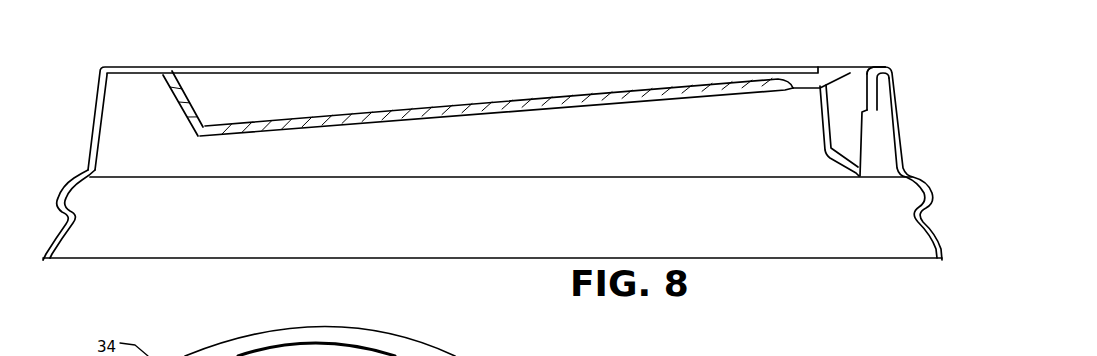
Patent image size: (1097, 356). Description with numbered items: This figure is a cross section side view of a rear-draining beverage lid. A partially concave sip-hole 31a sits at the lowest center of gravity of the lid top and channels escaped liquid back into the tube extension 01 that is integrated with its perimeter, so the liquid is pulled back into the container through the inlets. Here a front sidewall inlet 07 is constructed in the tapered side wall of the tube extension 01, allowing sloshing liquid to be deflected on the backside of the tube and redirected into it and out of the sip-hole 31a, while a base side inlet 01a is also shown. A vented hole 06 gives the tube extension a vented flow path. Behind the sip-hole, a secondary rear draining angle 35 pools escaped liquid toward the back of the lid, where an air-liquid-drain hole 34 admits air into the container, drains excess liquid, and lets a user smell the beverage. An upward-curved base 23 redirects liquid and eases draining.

The air-liquid-drain hole 34 is at (205, 127).
The secondary rear draining angle 35 is at (363, 112).
The tube extension 01 is at (819, 86).
The base side inlet 01a is at (845, 100).
The vented hole 06 is at (888, 77).
The front sidewall inlet 07 is at (867, 145).
The upward-curved base 23 is at (848, 165).
The partially concave sip-hole 31a is at (793, 83).